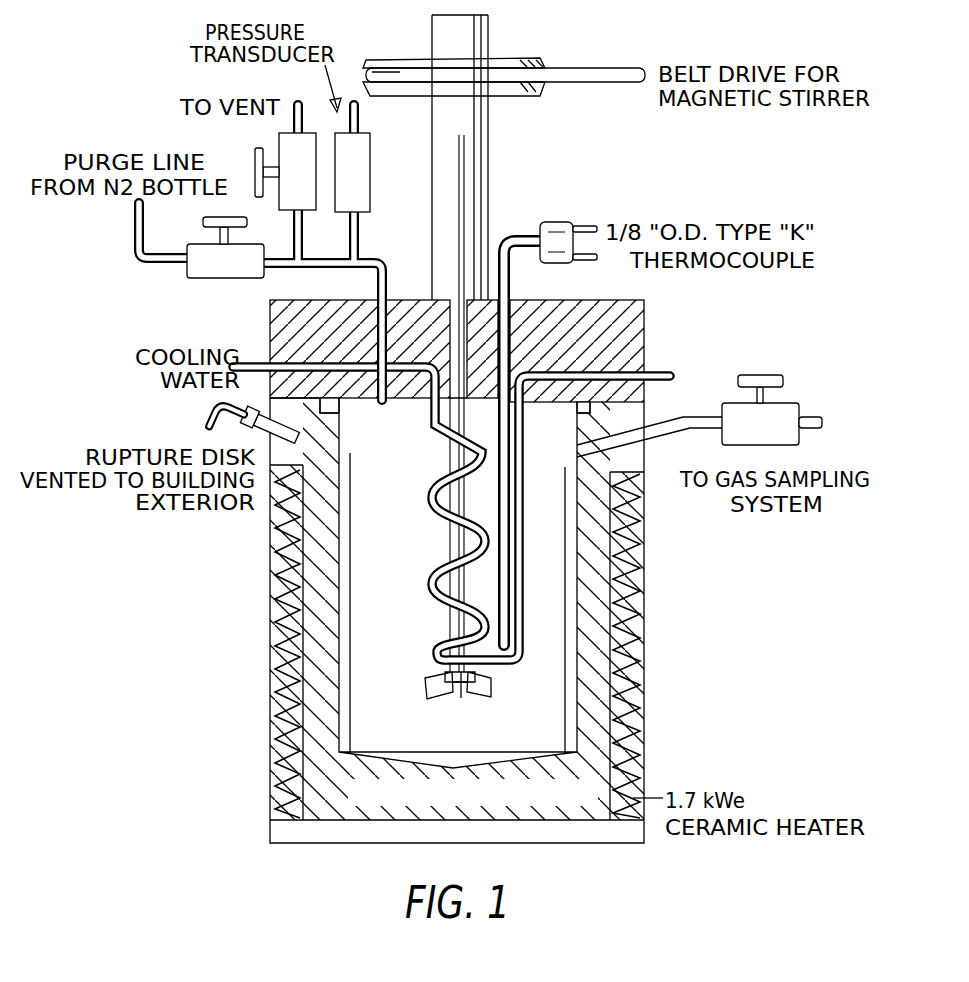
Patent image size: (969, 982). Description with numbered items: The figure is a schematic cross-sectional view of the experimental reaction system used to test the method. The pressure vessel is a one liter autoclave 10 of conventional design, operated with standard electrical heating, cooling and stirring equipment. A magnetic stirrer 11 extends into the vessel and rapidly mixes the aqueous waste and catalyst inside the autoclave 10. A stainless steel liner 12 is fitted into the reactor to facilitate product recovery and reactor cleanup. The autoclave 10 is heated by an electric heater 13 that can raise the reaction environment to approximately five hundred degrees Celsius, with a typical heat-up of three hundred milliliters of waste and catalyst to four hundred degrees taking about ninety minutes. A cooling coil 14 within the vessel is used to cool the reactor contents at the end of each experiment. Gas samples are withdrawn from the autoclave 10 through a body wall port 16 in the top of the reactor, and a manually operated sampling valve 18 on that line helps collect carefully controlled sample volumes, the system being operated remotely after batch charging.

The autoclave 10 is at (270, 733).
The magnetic stirrer 11 is at (457, 698).
The stainless steel liner 12 is at (565, 702).
The electric heater 13 is at (637, 648).
The cooling coil 14 is at (524, 640).
The body wall port 16 is at (695, 412).
The sampling valve 18 is at (777, 375).